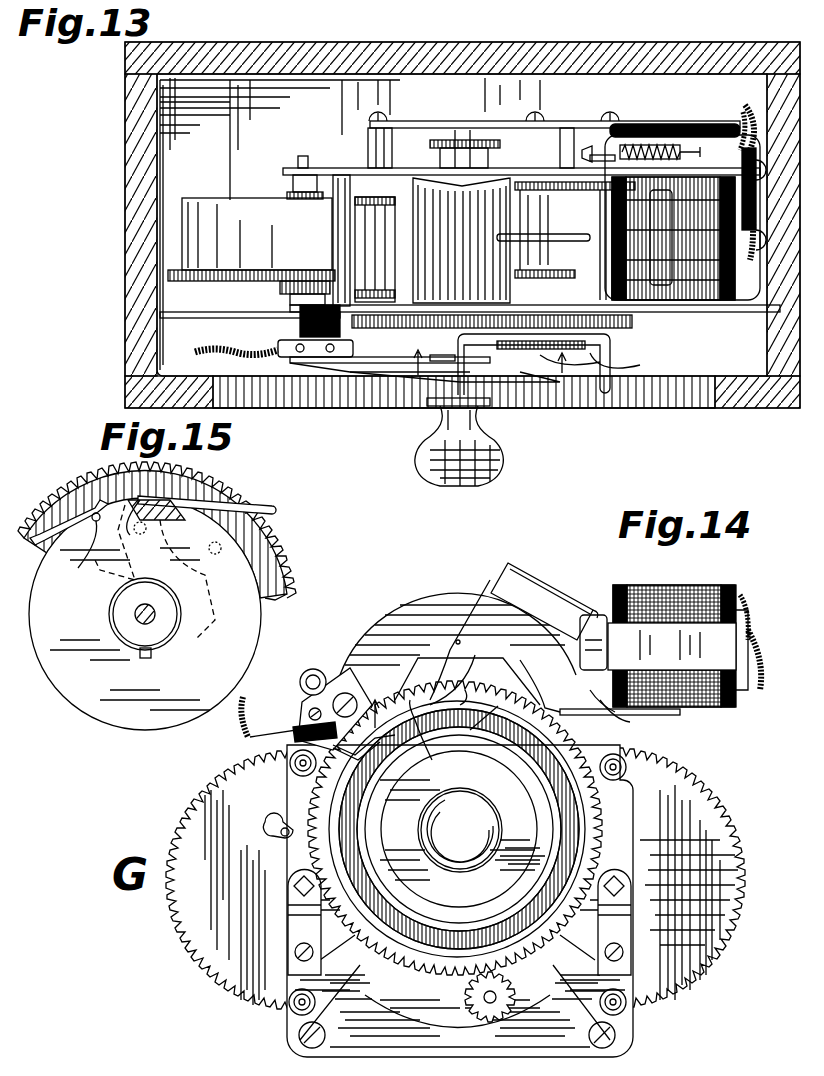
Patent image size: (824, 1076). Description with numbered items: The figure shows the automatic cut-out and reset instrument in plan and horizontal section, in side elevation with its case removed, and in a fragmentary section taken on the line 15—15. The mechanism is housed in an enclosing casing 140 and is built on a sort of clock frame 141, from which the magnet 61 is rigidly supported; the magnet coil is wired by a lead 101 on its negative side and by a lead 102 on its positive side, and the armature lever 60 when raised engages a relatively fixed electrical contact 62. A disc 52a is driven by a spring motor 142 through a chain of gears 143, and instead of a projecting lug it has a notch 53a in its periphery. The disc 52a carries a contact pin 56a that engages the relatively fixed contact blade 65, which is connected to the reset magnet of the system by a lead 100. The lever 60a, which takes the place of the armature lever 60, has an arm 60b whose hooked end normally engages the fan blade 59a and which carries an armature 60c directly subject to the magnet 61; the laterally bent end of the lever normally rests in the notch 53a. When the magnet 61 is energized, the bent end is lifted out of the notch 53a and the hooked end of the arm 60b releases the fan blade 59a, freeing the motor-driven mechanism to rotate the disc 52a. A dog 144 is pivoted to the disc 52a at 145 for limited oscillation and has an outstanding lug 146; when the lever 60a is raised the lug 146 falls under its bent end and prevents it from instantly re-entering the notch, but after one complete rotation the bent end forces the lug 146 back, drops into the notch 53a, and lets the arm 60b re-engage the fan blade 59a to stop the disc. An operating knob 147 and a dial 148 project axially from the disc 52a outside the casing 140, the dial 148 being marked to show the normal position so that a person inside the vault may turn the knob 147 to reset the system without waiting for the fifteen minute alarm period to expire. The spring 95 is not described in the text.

In FIG. 13, the section line 15 is at (358, 380).
In FIG. 13, the disc 52a is at (628, 358).
In FIG. 15, the disc 52a is at (145, 614).
In FIG. 14, the disc 52a is at (445, 948).
In FIG. 14, the notch 53a is at (460, 705).
In FIG. 15, the contact pin 56a is at (80, 554).
In FIG. 14, the contact pin 56a is at (432, 760).
In FIG. 13, the fan blade 59a is at (461, 240).
In FIG. 14, the fan blade 59a is at (486, 576).
In FIG. 13, the armature lever 60 is at (652, 345).
In FIG. 15, the lever 60a is at (140, 500).
In FIG. 14, the lever 60a is at (554, 709).
In FIG. 13, the arm 60b is at (538, 240).
In FIG. 14, the arm 60b is at (548, 580).
In FIG. 13, the armature 60c is at (650, 252).
In FIG. 14, the armature 60c is at (579, 627).
In FIG. 13, the magnet 61 is at (712, 285).
In FIG. 14, the magnet 61 is at (690, 600).
In FIG. 13, the fixed electrical contact 62 is at (598, 150).
In FIG. 13, the contact blade 65 is at (280, 352).
In FIG. 15, the contact blade 65 is at (35, 545).
In FIG. 14, the contact blade 65 is at (378, 700).
In FIG. 13, the spring 95 is at (650, 140).
In FIG. 14, the lead 100 is at (246, 730).
In FIG. 13, the lead 101 is at (740, 107).
In FIG. 14, the lead 101 is at (742, 598).
In FIG. 13, the lead 102 is at (748, 106).
In FIG. 14, the lead 102 is at (760, 660).
In FIG. 13, the enclosing casing 140 is at (688, 52).
In FIG. 14, the clock frame 141 is at (374, 652).
In FIG. 13, the spring motor 142 is at (251, 251).
In FIG. 13, the chain of gears 143 is at (388, 313).
In FIG. 15, the chain of gears 143 is at (270, 572).
In FIG. 14, the chain of gears 143 is at (608, 769).
In FIG. 15, the dog 144 is at (161, 575).
In FIG. 15, the pivot 145 is at (125, 618).
In FIG. 15, the lug 146 is at (130, 500).
In FIG. 13, the operating knob 147 is at (425, 478).
In FIG. 14, the operating knob 147 is at (460, 830).
In FIG. 13, the dial 148 is at (405, 385).
In FIG. 14, the dial 148 is at (475, 885).